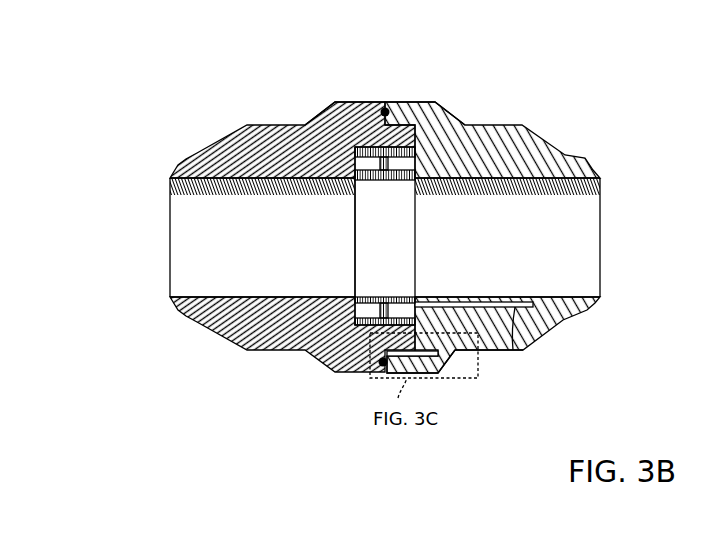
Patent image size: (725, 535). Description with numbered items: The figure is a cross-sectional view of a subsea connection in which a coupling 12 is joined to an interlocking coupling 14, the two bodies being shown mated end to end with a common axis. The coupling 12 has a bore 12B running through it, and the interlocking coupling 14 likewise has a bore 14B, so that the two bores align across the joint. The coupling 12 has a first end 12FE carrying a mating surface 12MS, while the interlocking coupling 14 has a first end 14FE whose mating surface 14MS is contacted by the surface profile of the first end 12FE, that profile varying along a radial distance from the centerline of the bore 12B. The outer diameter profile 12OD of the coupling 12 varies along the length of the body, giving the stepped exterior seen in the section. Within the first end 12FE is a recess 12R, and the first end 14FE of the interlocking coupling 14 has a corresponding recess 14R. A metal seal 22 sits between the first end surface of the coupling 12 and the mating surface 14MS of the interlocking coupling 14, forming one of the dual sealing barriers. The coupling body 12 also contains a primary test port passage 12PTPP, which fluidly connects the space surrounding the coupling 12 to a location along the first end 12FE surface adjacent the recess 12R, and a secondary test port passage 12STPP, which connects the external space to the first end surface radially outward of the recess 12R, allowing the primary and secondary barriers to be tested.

The coupling 12 is at (536, 144).
The interlocking coupling 14 is at (268, 134).
The metal seal 22 is at (370, 375).
The bore 12B is at (580, 238).
The bore 14B is at (193, 219).
The first end 12FE is at (425, 99).
The first end 14FE is at (342, 99).
The mating surface 12MS is at (411, 207).
The mating surface 14MS is at (360, 244).
The recess 12R is at (419, 268).
The recess 14R is at (349, 262).
The primary test port passage 12PTPP is at (517, 352).
The secondary test port passage 12STPP is at (433, 358).
The outer diameter profile 12OD is at (505, 355).